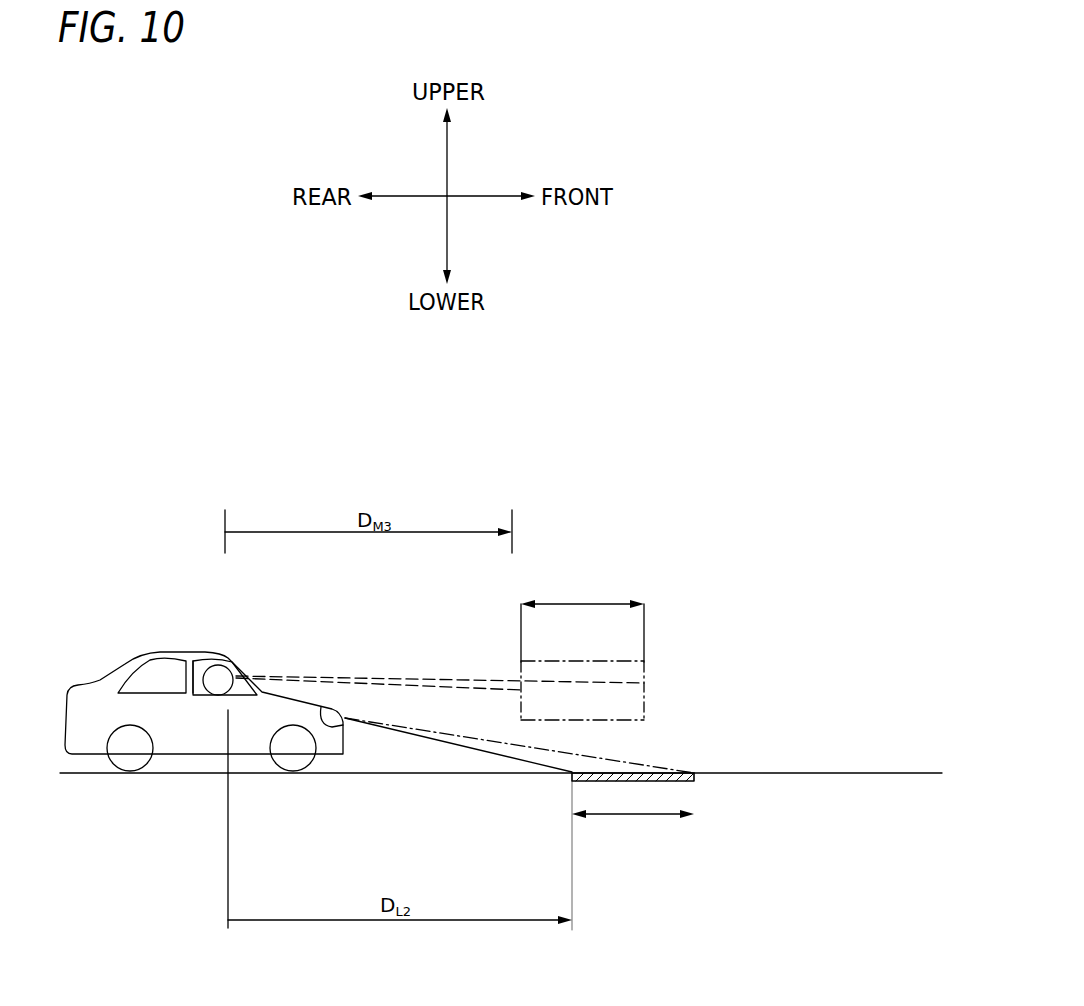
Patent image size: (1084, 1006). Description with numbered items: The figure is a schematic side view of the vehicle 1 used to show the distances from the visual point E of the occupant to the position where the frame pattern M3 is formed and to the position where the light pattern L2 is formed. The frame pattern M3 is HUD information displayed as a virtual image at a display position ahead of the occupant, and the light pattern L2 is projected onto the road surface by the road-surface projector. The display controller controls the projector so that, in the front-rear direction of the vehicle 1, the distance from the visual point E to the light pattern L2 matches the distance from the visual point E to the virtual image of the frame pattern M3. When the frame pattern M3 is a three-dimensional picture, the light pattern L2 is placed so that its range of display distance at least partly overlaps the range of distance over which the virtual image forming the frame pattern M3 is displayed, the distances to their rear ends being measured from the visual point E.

The vehicle 1 is at (137, 657).
The visual point of the occupant E is at (235, 658).
The frame pattern M3 is at (636, 668).
The light pattern L2 is at (650, 781).